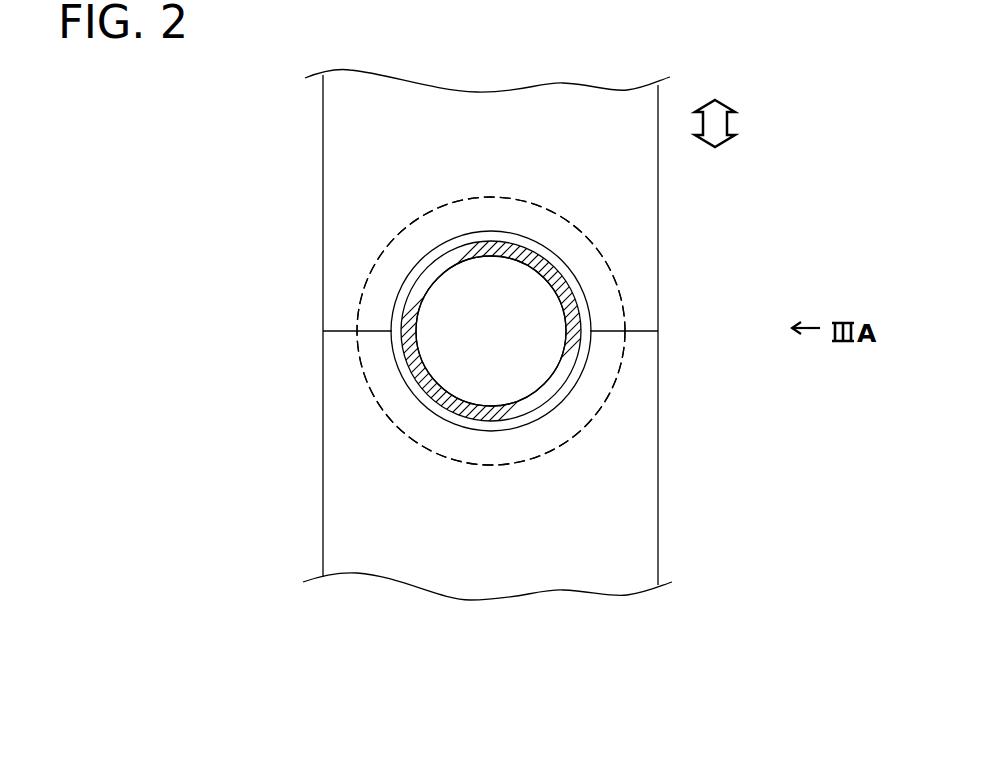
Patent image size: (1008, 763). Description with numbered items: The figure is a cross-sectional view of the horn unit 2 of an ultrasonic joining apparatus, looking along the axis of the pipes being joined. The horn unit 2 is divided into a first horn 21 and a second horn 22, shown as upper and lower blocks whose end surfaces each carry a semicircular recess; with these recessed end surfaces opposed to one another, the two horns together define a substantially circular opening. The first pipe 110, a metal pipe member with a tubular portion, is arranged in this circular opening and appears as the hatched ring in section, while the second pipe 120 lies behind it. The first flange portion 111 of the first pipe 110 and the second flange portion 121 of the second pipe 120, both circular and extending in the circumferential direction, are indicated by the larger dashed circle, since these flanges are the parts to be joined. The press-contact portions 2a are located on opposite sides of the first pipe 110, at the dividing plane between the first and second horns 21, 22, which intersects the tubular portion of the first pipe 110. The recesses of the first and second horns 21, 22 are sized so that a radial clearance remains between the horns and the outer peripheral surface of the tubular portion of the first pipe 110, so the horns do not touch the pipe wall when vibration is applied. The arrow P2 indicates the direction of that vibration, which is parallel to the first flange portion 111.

The horn unit 2 is at (490, 347).
The first horn 21 is at (418, 115).
The second horn 22 is at (408, 562).
The press-contact portions 2a is at (363, 337).
The first pipe 110 is at (413, 297).
The second pipe 120 is at (378, 328).
The first flange portion 111 is at (397, 237).
The second flange portion 121 is at (407, 319).
The vibration direction arrow P2 is at (733, 121).